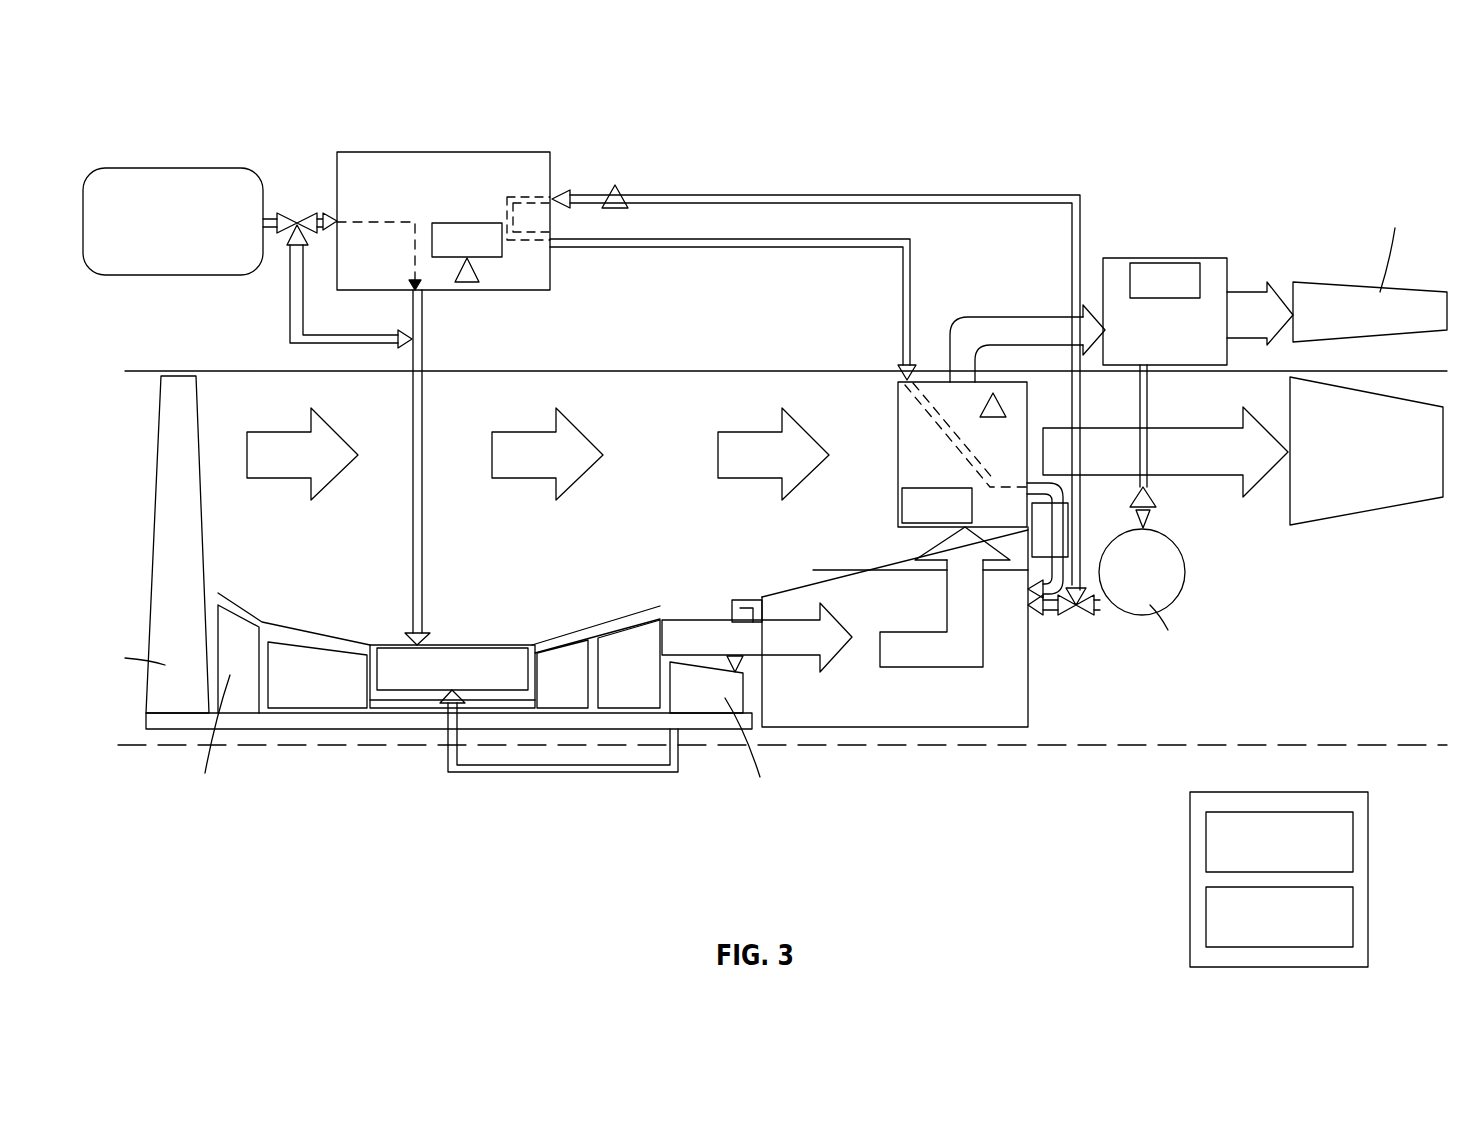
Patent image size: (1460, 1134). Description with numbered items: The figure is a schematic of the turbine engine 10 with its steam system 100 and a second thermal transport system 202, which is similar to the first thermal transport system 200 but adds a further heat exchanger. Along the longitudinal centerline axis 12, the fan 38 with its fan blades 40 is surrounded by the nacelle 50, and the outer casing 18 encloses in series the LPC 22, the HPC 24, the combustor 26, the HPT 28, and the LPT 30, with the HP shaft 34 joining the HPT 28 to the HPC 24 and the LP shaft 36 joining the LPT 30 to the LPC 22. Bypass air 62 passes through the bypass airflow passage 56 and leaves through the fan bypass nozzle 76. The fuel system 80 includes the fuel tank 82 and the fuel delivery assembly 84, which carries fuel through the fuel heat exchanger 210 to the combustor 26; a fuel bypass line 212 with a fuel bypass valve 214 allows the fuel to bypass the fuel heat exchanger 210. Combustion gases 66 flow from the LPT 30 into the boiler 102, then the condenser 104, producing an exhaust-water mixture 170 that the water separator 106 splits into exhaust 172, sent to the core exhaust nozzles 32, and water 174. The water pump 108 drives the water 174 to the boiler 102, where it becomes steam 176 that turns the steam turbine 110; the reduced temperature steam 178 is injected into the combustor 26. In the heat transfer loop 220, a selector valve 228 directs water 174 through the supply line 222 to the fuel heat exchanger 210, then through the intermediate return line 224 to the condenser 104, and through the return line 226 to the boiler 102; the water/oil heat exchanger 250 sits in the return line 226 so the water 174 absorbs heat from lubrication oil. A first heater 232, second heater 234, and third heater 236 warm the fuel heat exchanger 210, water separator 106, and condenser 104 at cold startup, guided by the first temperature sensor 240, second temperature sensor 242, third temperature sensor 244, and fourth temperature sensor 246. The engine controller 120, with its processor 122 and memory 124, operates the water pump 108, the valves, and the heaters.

The turbine engine 10 is at (142, 356).
The longitudinal centerline axis 12 is at (1125, 745).
The outer casing 18 is at (522, 640).
The low-pressure compressor 22 is at (262, 620).
The high-pressure compressor 24 is at (330, 648).
The combustor 26 is at (405, 648).
The high-pressure turbine 28 is at (558, 665).
The low-pressure turbine 30 is at (635, 612).
The core exhaust nozzles 32 is at (1418, 292).
The high-pressure shaft 34 is at (403, 702).
The low-pressure shaft 36 is at (300, 718).
The fan 38 is at (146, 514).
The fan blades 40 is at (157, 405).
The nacelle 50 is at (500, 371).
The bypass airflow passage 56 is at (680, 382).
The bypass air 62 is at (525, 478).
The combustion gases 66 is at (697, 618).
The fan bypass nozzle 76 is at (1365, 510).
The fuel system 80 is at (290, 133).
The fuel tank 82 is at (205, 168).
The fuel delivery assembly 84 is at (423, 430).
The steam system 100 is at (1209, 127).
The boiler 102 is at (878, 727).
The condenser 104 is at (898, 410).
The water separator 106 is at (1163, 258).
The water pump 108 is at (1190, 575).
The steam turbine 110 is at (715, 670).
The engine controller 120 is at (1368, 873).
The processor 122 is at (1206, 845).
The memory 124 is at (1206, 920).
The exhaust-water mixture 170 is at (985, 317).
The exhaust 172 is at (1260, 292).
The water 174 is at (1148, 413).
The steam 176 is at (752, 600).
The steam 178 is at (565, 772).
The first thermal transport system 200 is at (924, 128).
The second thermal transport system 202 is at (851, 166).
The fuel heat exchanger 210 is at (493, 152).
The fuel bypass line 212 is at (290, 300).
The fuel bypass valve 214 is at (300, 213).
The heat transfer loop 220 is at (733, 181).
The supply line 222 is at (1076, 195).
The intermediate return line 224 is at (763, 247).
The return line 226 is at (1030, 592).
The selector valve 228 is at (1078, 612).
The first heater 232 is at (500, 257).
The second heater 234 is at (1196, 263).
The third heater 236 is at (902, 490).
The first temperature sensor 240 is at (625, 195).
The second temperature sensor 242 is at (466, 283).
The third temperature sensor 244 is at (1156, 500).
The fourth temperature sensor 246 is at (988, 405).
The water/oil heat exchanger 250 is at (1032, 530).